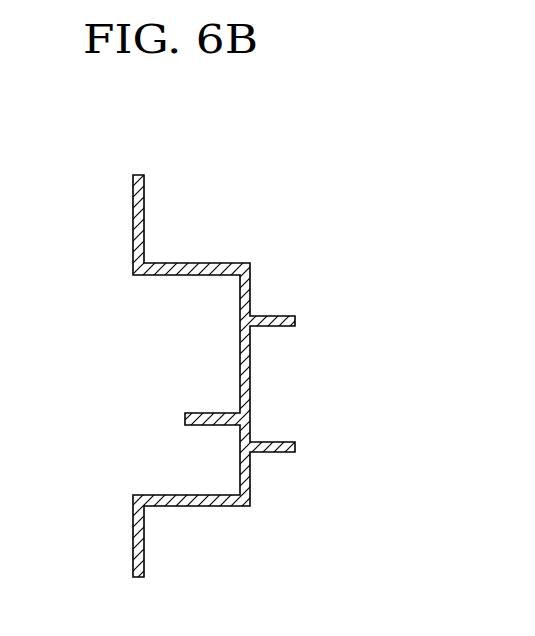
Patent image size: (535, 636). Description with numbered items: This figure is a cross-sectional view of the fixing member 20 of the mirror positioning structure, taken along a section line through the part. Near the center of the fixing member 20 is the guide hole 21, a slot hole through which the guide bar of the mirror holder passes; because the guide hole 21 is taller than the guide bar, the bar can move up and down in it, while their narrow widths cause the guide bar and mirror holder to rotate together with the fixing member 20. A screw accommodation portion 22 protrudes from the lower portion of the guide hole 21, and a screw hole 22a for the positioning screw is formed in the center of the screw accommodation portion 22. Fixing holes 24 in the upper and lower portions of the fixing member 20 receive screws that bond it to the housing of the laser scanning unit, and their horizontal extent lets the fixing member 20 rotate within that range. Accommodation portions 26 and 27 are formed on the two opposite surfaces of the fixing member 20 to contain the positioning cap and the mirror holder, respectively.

The fixing member 20 is at (206, 382).
The guide hole 21 is at (241, 368).
The screw accommodation portion 22 is at (188, 414).
The screw hole 22a is at (223, 453).
The fixing hole 24 is at (140, 213).
The accommodation portion 26 is at (228, 311).
The accommodation portion 27 is at (291, 359).